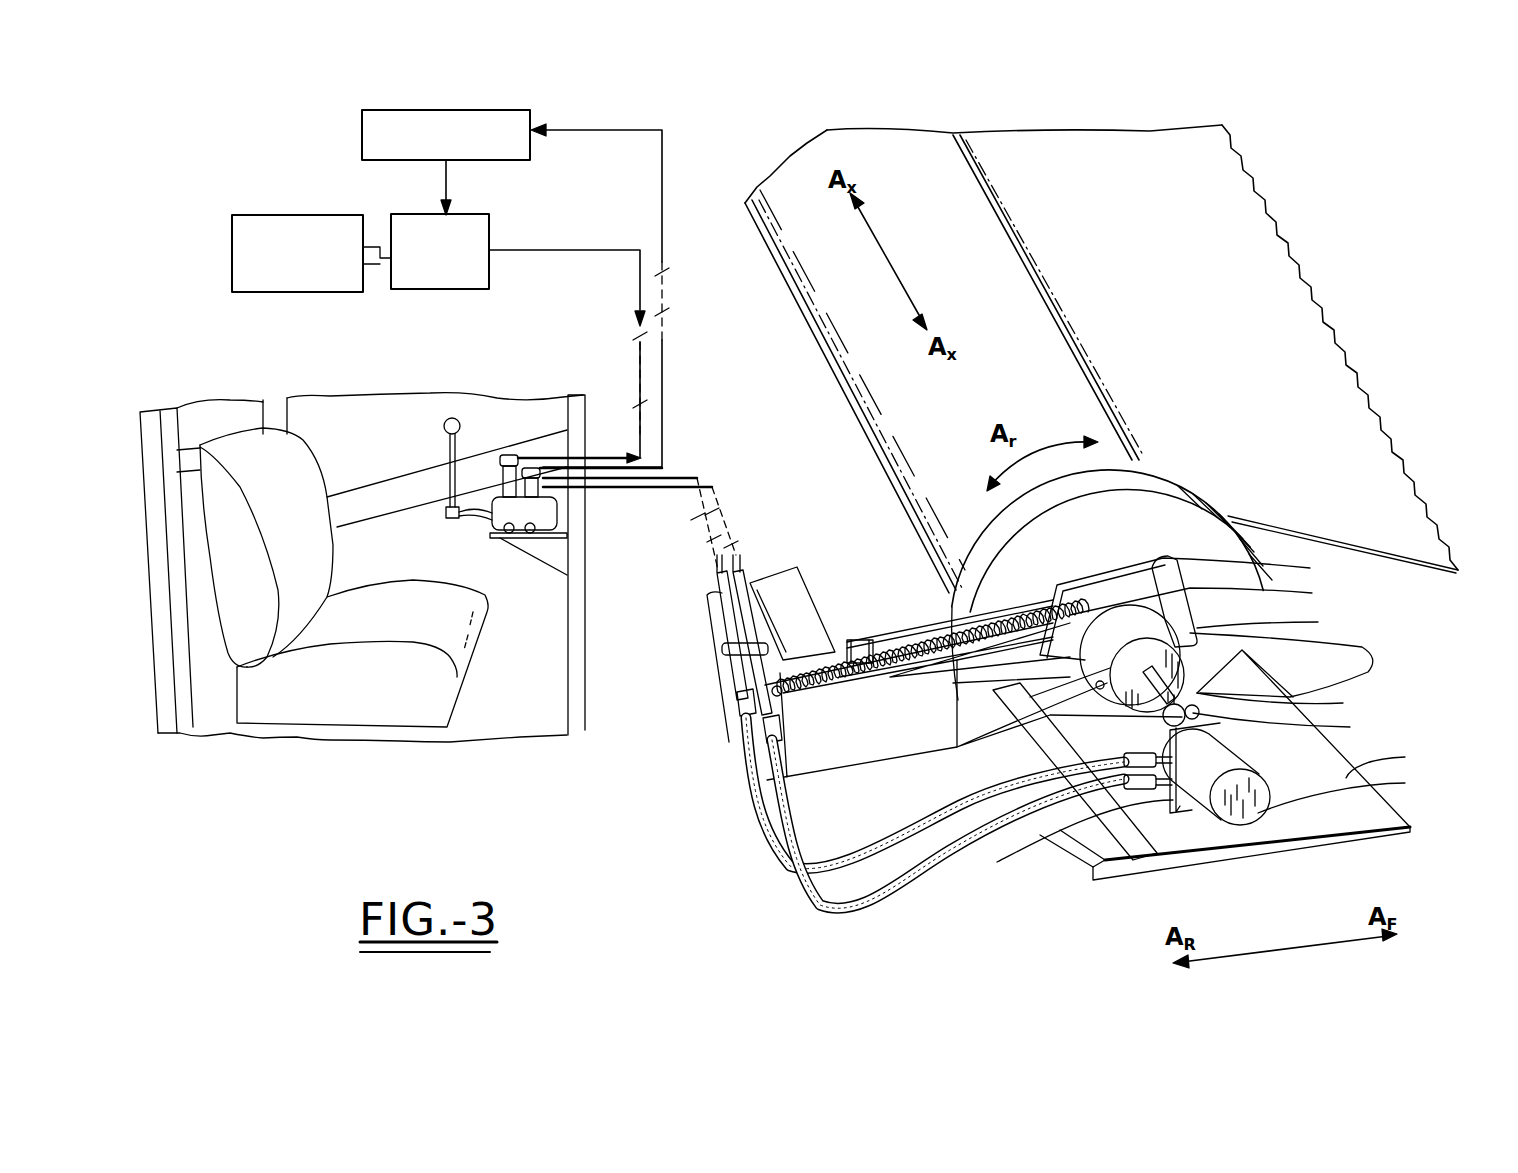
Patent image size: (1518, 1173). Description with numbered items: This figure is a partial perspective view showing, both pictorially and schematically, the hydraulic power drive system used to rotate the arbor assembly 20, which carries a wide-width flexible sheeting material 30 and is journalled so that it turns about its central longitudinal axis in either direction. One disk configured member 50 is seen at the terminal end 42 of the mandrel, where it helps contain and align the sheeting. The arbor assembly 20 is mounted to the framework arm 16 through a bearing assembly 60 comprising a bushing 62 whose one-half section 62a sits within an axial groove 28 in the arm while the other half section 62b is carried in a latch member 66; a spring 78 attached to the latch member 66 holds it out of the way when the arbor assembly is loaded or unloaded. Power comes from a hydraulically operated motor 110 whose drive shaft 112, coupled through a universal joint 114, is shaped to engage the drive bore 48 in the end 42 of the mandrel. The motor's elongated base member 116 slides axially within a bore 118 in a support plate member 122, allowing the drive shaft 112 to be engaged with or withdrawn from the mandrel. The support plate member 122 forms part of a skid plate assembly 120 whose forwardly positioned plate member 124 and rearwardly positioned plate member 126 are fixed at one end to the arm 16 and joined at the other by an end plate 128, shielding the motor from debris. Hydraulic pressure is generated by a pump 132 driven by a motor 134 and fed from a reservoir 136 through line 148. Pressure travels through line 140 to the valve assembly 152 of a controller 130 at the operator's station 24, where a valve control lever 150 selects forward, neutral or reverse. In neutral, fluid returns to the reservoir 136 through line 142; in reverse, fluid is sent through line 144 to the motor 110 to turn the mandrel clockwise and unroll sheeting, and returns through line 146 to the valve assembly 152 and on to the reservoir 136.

The arm 16 is at (1378, 650).
The arbor assembly 20 is at (848, 427).
The operator's station 24 is at (579, 742).
The axial groove 28 is at (1110, 737).
The flexible sheeting material 30 is at (1277, 251).
The terminal end 42 is at (1148, 630).
The drive bore 48 is at (1147, 632).
The disk configured member 50 is at (973, 543).
The bearing assembly 60 is at (1125, 562).
The bushing 62 is at (1221, 636).
The one-half section of bushing 62a is at (955, 748).
The other half section of bushing 62b is at (1282, 619).
The latch member 66 is at (1193, 604).
The spring 78 is at (840, 685).
The hydraulically operated motor 110 is at (1242, 815).
The drive shaft 112 is at (1280, 707).
The universal joint 114 is at (1295, 727).
The base member 116 is at (1183, 868).
The bore 118 is at (1085, 850).
The skid plate assembly 120 is at (1042, 828).
The support plate member 122 is at (1357, 790).
The forwardly positioned plate member 124 is at (1401, 759).
The rearwardly positioned plate member 126 is at (1100, 882).
The end plate 128 is at (1360, 835).
The controller 130 is at (509, 448).
The pump 132 is at (457, 290).
The motor 134 is at (257, 214).
The reservoir 136 is at (362, 134).
The line 140 is at (593, 251).
The line 142 is at (607, 131).
The line 144 is at (772, 862).
The line 146 is at (807, 902).
The line 148 is at (448, 180).
The valve control lever 150 is at (449, 447).
The valve assembly 152 is at (492, 521).